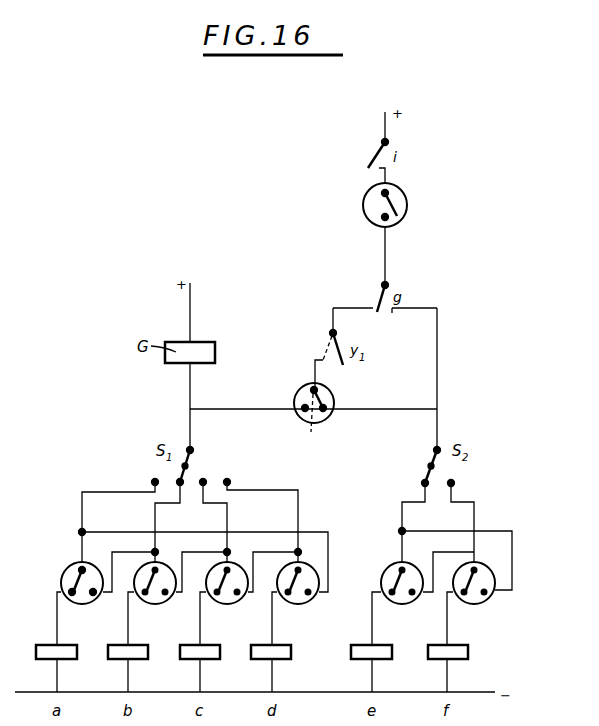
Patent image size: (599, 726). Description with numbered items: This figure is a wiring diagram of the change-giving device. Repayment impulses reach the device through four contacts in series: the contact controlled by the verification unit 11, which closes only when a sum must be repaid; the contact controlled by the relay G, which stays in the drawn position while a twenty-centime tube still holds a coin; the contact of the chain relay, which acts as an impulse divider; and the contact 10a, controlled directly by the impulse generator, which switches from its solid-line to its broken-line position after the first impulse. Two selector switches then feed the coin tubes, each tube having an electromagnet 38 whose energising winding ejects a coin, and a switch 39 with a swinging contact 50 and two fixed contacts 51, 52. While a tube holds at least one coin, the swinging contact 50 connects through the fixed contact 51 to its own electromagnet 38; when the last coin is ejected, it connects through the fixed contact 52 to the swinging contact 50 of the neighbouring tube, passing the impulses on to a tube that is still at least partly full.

The verification unit 11 is at (407, 200).
The contact 10a is at (314, 418).
The switch 39 is at (84, 600).
The electromagnet 38 is at (112, 655).
The swinging contact 50 is at (70, 568).
The fixed contact 51 is at (63, 580).
The fixed contact 52 is at (96, 600).